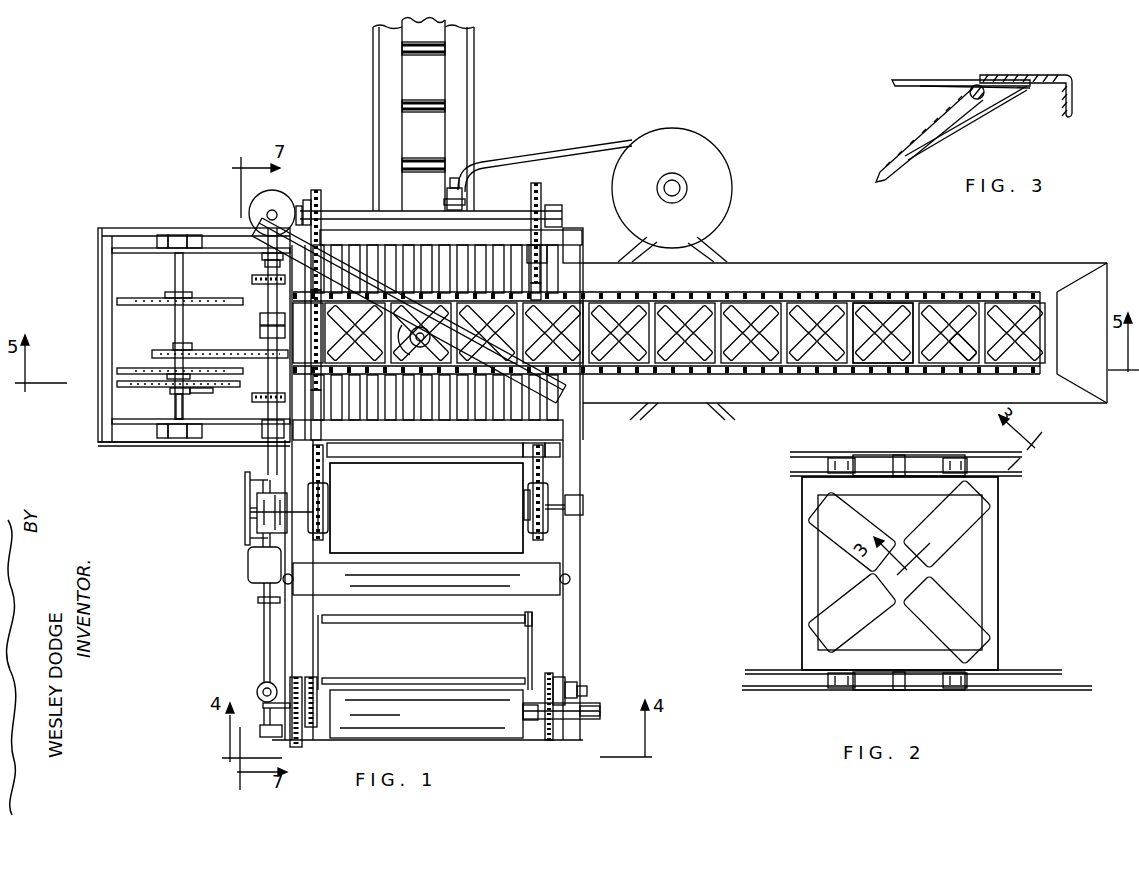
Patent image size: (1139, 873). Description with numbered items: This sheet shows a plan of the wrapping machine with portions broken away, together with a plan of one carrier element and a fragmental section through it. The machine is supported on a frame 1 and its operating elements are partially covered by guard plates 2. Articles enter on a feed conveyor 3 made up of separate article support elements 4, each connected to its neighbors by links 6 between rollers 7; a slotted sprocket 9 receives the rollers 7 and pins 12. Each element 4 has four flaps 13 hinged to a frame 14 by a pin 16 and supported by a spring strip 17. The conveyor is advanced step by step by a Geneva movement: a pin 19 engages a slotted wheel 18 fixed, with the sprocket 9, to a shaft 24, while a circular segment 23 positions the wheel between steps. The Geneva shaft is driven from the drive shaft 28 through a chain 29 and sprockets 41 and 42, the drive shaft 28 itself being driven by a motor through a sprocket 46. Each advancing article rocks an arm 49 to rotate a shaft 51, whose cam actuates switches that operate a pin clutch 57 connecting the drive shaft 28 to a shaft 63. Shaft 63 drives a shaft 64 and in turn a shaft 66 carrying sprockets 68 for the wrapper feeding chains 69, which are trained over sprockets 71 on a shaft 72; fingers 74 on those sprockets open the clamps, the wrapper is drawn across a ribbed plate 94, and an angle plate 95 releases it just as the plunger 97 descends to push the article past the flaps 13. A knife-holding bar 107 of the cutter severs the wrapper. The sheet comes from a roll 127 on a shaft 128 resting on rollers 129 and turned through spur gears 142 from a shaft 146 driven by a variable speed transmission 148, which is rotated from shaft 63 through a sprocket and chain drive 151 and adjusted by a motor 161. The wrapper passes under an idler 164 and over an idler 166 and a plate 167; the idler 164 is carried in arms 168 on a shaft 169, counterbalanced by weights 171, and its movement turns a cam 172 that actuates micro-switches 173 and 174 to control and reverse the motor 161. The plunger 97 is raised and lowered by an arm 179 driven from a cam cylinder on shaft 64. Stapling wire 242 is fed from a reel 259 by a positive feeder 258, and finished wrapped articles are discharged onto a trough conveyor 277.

In FIG. 1, the frame 1 is at (108, 344).
In FIG. 1, the guard plates 2 is at (130, 442).
In FIG. 1, the feed conveyor 3 is at (974, 264).
In FIG. 1, the article support element 4 is at (878, 362).
In FIG. 2, the article support element 4 is at (1006, 572).
In FIG. 2, the links 6 is at (985, 456).
In FIG. 2, the rollers 7 is at (955, 458).
In FIG. 1, the sprocket 9 is at (200, 298).
In FIG. 2, the pins 12 is at (902, 458).
In FIG. 1, the flaps 13 is at (964, 358).
In FIG. 2, the flaps 13 is at (956, 603).
In FIG. 3, the flaps 13 is at (925, 128).
In FIG. 1, the frame 14 is at (942, 362).
In FIG. 2, the frame 14 is at (998, 530).
In FIG. 3, the frame 14 is at (1075, 100).
In FIG. 3, the pin 16 is at (974, 98).
In FIG. 3, the spring strip 17 is at (960, 128).
In FIG. 1, the slotted wheel 18 is at (234, 388).
In FIG. 1, the pin 19 is at (204, 394).
In FIG. 1, the circular segment 23 is at (172, 392).
In FIG. 1, the shaft 24 is at (175, 406).
In FIG. 1, the drive shaft 28 is at (273, 408).
In FIG. 1, the chain 29 is at (216, 350).
In FIG. 1, the sprocket 41 is at (185, 347).
In FIG. 1, the sprocket 42 is at (264, 346).
In FIG. 1, the sprocket 46 is at (256, 402).
In FIG. 1, the arm 49 is at (458, 338).
In FIG. 1, the shaft 51 is at (552, 296).
In FIG. 1, the pin clutch 57 is at (257, 319).
In FIG. 1, the shaft 63 is at (262, 292).
In FIG. 1, the shaft 64 is at (276, 212).
In FIG. 1, the shaft 66 is at (338, 212).
In FIG. 1, the sprockets 68 is at (320, 200).
In FIG. 1, the wrapper feeding chains 69 is at (324, 470).
In FIG. 1, the sprockets 71 is at (318, 540).
In FIG. 1, the shaft 72 is at (585, 505).
In FIG. 1, the fingers 74 is at (524, 493).
In FIG. 1, the plate 94 is at (480, 248).
In FIG. 1, the angle plate 95 is at (548, 252).
In FIG. 1, the plunger 97 is at (418, 447).
In FIG. 1, the knife-holding bar 107 is at (378, 460).
In FIG. 1, the roll 127 is at (493, 720).
In FIG. 1, the shaft 128 is at (600, 705).
In FIG. 1, the rollers 129 is at (552, 680).
In FIG. 1, the spur gears 142 is at (318, 685).
In FIG. 1, the shaft 146 is at (245, 660).
In FIG. 1, the variable speed transmission device 148 is at (242, 517).
In FIG. 1, the sprocket and chain drive 151 is at (262, 257).
In FIG. 1, the motor 161 is at (250, 570).
In FIG. 1, the idler 164 is at (467, 623).
In FIG. 1, the idler 166 is at (548, 590).
In FIG. 1, the plate 167 is at (445, 506).
In FIG. 1, the arms 168 is at (322, 658).
In FIG. 1, the shaft 169 is at (405, 679).
In FIG. 1, the weights 171 is at (325, 740).
In FIG. 1, the cam 172 is at (565, 680).
In FIG. 1, the micro-switch 173 is at (577, 688).
In FIG. 1, the micro-switch 174 is at (587, 693).
In FIG. 1, the arm 179 is at (260, 232).
In FIG. 1, the wire 242 is at (548, 154).
In FIG. 1, the positive feeder 258 is at (466, 201).
In FIG. 1, the reel 259 is at (722, 164).
In FIG. 1, the trough conveyor 277 is at (482, 93).